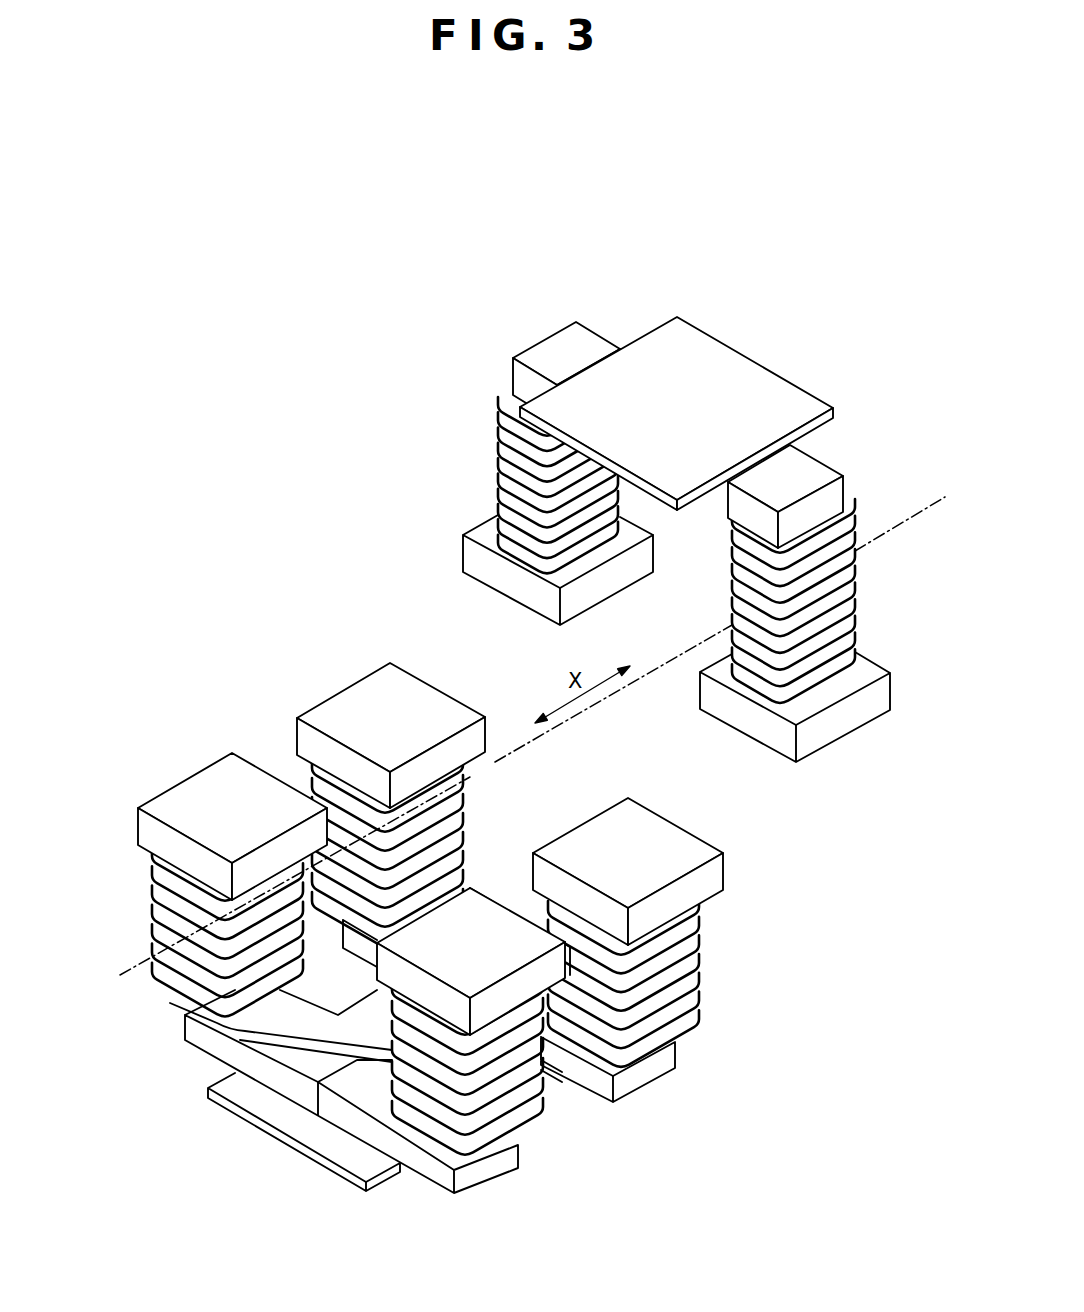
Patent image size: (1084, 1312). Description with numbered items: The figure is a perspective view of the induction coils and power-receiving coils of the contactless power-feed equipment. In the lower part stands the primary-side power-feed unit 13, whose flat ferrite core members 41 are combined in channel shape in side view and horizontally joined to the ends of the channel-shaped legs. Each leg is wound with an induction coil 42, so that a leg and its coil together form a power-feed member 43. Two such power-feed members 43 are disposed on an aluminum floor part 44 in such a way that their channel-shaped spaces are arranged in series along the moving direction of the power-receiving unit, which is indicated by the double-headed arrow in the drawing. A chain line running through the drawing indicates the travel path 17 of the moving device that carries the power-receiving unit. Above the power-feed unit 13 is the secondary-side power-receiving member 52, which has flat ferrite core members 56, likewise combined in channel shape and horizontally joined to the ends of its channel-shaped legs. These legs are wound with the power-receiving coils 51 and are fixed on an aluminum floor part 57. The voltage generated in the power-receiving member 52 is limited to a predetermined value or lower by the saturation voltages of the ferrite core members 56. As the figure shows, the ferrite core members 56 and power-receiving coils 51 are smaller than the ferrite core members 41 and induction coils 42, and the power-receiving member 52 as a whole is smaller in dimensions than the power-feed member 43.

The power-feed unit 13 is at (425, 888).
The travel path 17 is at (635, 695).
The ferrite core member 41 is at (466, 715).
The induction coil 42 is at (155, 922).
The power-feed member 43 is at (425, 903).
The aluminum floor part 44 is at (270, 1110).
The power-receiving coil 51 is at (500, 452).
The power-receiving member 52 is at (670, 525).
The ferrite core member 56 is at (470, 548).
The aluminum floor part 57 is at (740, 375).